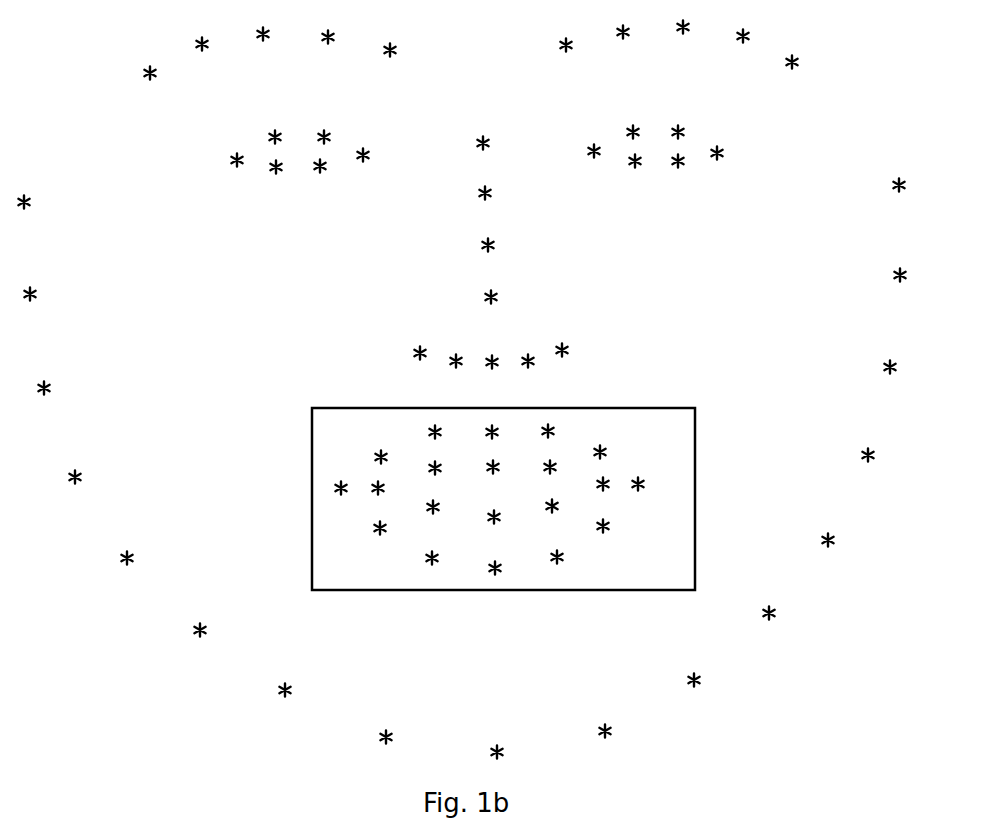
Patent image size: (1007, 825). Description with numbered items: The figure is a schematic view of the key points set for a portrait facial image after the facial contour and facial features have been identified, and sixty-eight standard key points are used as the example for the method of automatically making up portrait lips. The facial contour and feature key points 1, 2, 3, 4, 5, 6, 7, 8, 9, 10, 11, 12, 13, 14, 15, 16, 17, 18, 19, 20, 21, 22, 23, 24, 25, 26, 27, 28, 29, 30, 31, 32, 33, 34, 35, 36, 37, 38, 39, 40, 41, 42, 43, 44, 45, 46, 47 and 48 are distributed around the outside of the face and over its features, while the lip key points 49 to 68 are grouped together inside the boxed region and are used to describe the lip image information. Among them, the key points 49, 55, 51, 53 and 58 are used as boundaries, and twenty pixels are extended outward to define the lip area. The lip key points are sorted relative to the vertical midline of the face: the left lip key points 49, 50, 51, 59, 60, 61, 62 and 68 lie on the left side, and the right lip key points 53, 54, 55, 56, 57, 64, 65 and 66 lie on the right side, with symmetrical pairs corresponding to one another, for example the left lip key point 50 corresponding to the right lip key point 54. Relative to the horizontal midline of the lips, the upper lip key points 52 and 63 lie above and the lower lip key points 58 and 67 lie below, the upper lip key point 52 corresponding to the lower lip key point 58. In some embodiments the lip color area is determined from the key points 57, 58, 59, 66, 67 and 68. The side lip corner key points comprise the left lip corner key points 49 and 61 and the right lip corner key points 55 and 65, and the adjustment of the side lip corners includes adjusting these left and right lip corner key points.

The key point 1 is at (34, 202).
The key point 2 is at (40, 294).
The key point 3 is at (54, 388).
The key point 4 is at (85, 477).
The key point 5 is at (137, 558).
The key point 6 is at (210, 630).
The key point 7 is at (295, 690).
The key point 8 is at (396, 737).
The key point 9 is at (507, 752).
The key point 10 is at (622, 731).
The key point 11 is at (711, 680).
The key point 12 is at (786, 613).
The key point 13 is at (845, 540).
The key point 14 is at (885, 455).
The key point 15 is at (907, 367).
The key point 16 is at (917, 275).
The key point 17 is at (916, 185).
The key point 18 is at (167, 73).
The key point 19 is at (219, 44).
The key point 20 is at (280, 34).
The key point 21 is at (345, 37).
The key point 22 is at (407, 50).
The key point 23 is at (583, 45).
The key point 24 is at (640, 32).
The key point 25 is at (700, 27).
The key point 26 is at (760, 36).
The key point 27 is at (809, 62).
The key point 28 is at (500, 143).
The key point 29 is at (502, 193).
The key point 30 is at (505, 245).
The key point 31 is at (508, 297).
The key point 32 is at (437, 353).
The key point 33 is at (473, 361).
The key point 34 is at (509, 362).
The key point 35 is at (545, 361).
The key point 36 is at (579, 350).
The key point 37 is at (254, 160).
The key point 38 is at (292, 137).
The key point 39 is at (341, 137).
The key point 40 is at (380, 155).
The key point 41 is at (337, 166).
The key point 42 is at (293, 167).
The key point 43 is at (611, 151).
The key point 44 is at (650, 132).
The key point 45 is at (695, 132).
The key point 46 is at (734, 153).
The key point 47 is at (695, 161).
The key point 48 is at (652, 161).
The left lip corner key point 49 is at (358, 488).
The left lip key point 50 is at (398, 457).
The left lip key point 51 is at (452, 432).
The upper lip key point 52 is at (509, 432).
The right lip key point 53 is at (565, 431).
The right lip key point 54 is at (617, 452).
The right lip corner key point 55 is at (655, 484).
The right lip key point 56 is at (620, 526).
The right lip key point 57 is at (574, 557).
The lower lip key point 58 is at (512, 568).
The left lip key point 59 is at (449, 558).
The left lip key point 60 is at (397, 528).
The left lip corner key point 61 is at (395, 488).
The left lip key point 62 is at (452, 468).
The upper lip key point 63 is at (510, 467).
The right lip key point 64 is at (567, 467).
The right lip corner key point 65 is at (620, 484).
The right lip key point 66 is at (569, 506).
The lower lip key point 67 is at (511, 517).
The left lip key point 68 is at (450, 507).